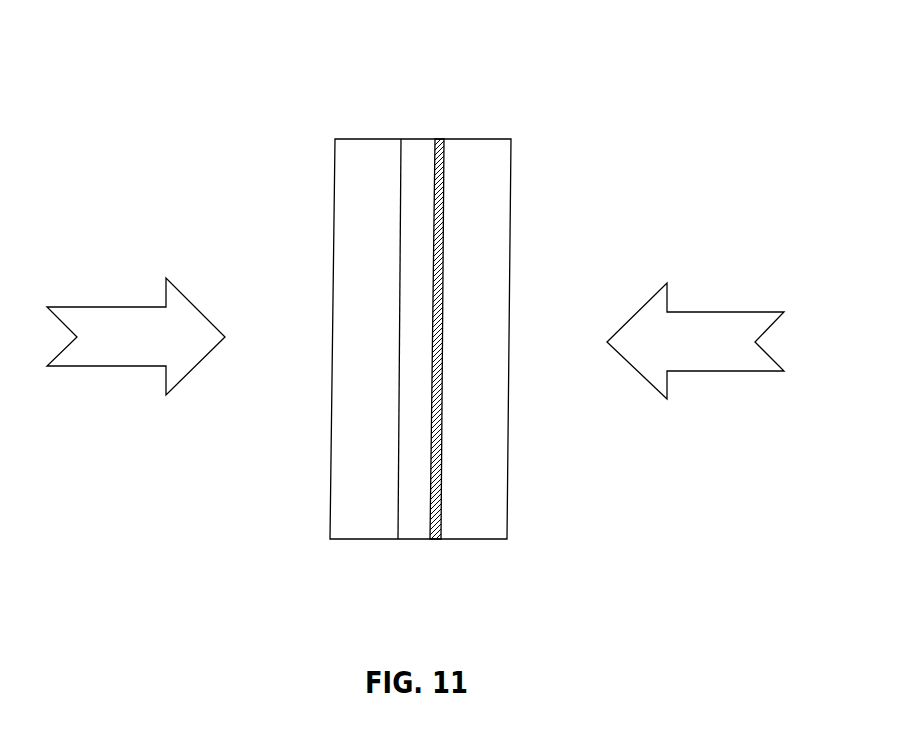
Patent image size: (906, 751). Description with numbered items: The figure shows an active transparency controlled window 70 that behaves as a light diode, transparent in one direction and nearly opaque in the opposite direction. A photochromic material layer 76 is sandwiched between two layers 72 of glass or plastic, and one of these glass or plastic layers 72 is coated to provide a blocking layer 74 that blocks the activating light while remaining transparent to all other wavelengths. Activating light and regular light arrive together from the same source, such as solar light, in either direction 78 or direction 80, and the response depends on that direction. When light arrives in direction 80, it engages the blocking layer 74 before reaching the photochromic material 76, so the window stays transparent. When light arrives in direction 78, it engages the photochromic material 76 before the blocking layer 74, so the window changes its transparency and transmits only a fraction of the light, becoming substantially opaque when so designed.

The active transparency controlled window 70 is at (572, 88).
The layers of glass or plastic 72 is at (360, 540).
The blocking layer 74 is at (437, 138).
The photochromic material layer 76 is at (420, 157).
The direction of incoming light 78 is at (93, 305).
The direction of incoming light 80 is at (738, 310).